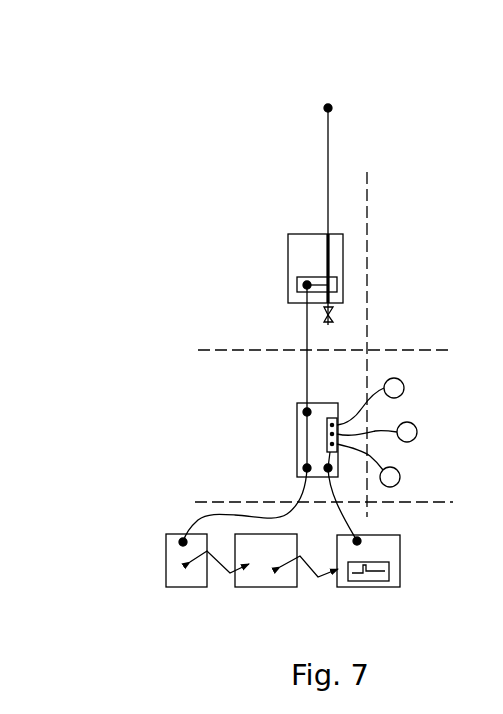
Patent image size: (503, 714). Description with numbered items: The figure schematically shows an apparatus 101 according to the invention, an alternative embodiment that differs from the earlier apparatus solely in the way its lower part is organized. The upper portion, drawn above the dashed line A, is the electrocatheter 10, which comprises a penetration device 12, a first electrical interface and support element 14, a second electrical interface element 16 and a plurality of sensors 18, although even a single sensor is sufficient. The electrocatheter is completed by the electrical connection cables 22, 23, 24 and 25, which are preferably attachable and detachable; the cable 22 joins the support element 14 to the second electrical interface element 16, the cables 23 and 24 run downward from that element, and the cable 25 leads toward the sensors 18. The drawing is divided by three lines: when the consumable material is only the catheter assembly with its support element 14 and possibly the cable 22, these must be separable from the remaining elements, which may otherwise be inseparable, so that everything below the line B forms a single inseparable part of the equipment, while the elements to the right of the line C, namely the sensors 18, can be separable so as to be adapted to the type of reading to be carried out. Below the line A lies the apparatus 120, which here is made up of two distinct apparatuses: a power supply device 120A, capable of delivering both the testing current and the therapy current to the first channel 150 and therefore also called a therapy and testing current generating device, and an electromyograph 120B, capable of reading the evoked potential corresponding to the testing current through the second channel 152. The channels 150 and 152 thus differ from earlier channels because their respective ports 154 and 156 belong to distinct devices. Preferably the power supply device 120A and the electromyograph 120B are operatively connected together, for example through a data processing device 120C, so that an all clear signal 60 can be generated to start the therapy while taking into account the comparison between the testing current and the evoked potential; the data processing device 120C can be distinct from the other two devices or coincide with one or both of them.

The apparatus 101 is at (193, 118).
The electrocatheter 10 is at (218, 225).
The penetration device 12 is at (323, 170).
The first electrical interface and support element 14 is at (287, 267).
The second electrical interface element 16 is at (292, 443).
The sensors 18 is at (402, 387).
The electrical connection cable 22 is at (307, 373).
The electrical connection cable 23 is at (203, 517).
The electrical connection cable 24 is at (345, 523).
The electrical connection cable 25 is at (355, 415).
The all clear signal 60 is at (368, 575).
The apparatus 120 is at (248, 585).
The power supply device 120A is at (180, 578).
The electromyograph 120B is at (396, 587).
The data processing device 120C is at (267, 578).
The first channel 150 is at (307, 432).
The second channel 152 is at (337, 513).
The port 154 is at (183, 543).
The port 156 is at (357, 541).
The dashed line A is at (193, 497).
The line B is at (207, 348).
The line C is at (368, 273).